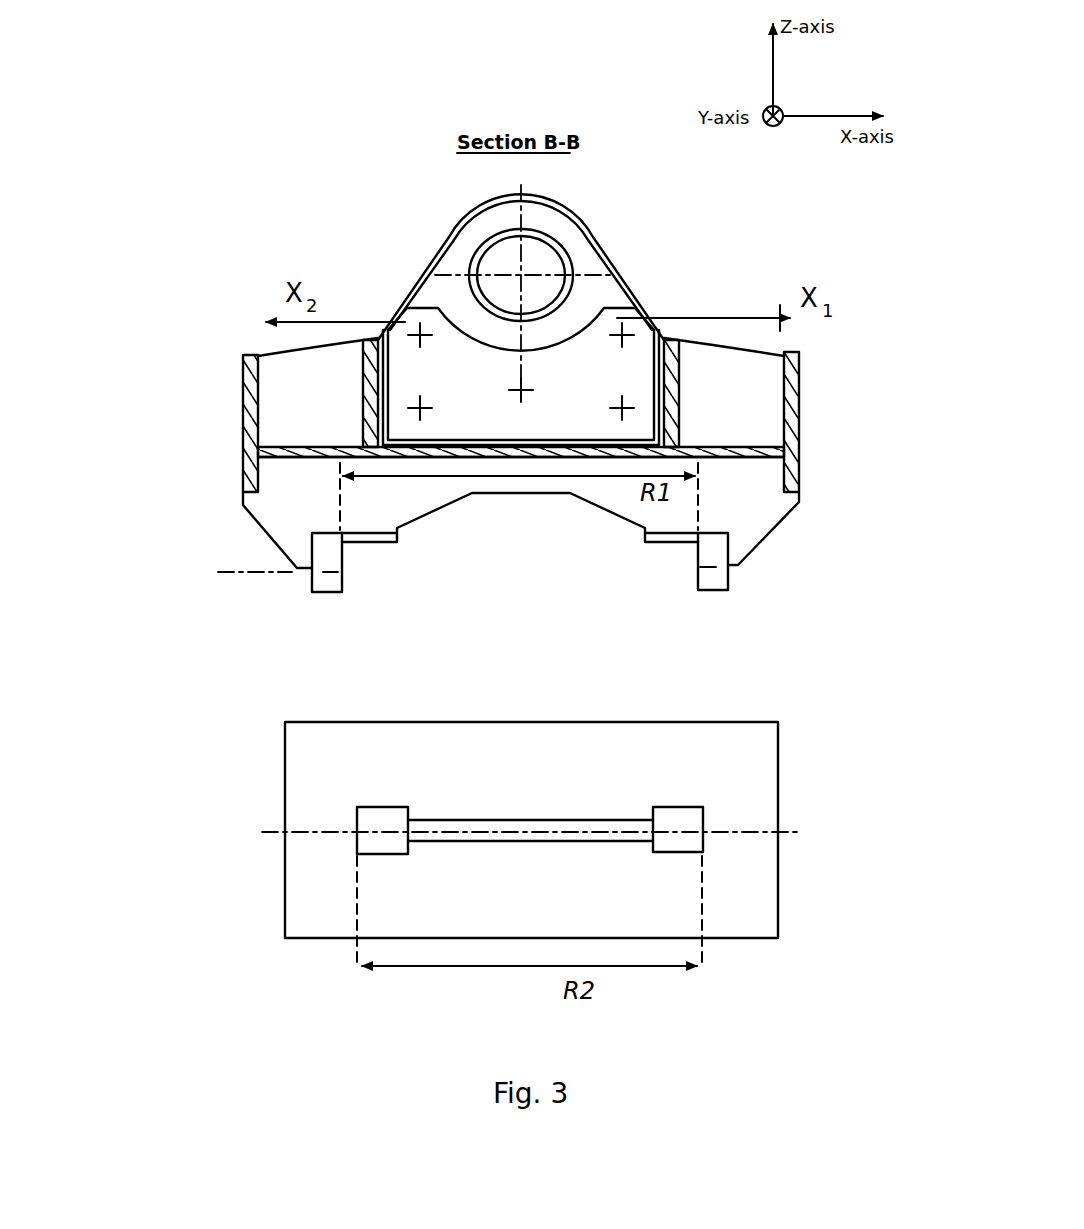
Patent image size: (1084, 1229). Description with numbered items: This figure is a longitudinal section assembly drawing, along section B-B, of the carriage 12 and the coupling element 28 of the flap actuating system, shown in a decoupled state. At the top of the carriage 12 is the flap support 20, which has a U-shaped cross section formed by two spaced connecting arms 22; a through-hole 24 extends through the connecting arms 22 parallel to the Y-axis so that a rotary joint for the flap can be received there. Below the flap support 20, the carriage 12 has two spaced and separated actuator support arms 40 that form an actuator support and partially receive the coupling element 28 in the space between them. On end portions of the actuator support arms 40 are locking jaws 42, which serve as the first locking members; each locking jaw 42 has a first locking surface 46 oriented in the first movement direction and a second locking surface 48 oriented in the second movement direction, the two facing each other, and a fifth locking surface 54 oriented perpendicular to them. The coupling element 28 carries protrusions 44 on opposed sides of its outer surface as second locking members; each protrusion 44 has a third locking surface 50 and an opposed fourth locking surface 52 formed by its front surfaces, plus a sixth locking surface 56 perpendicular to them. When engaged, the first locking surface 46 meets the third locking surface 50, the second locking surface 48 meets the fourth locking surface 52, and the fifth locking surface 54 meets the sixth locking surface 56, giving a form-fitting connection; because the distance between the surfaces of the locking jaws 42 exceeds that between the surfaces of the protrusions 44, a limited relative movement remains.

The carriage 12 is at (172, 292).
The flap support 20 is at (521, 325).
The connecting arms 22 is at (562, 231).
The through-hole 24 is at (524, 262).
The coupling element 28 is at (290, 963).
The actuator support arms 40 is at (750, 493).
The locking jaws 42 is at (568, 573).
The protrusions 44 is at (586, 800).
The first locking surface 46 is at (344, 574).
The second locking surface 48 is at (696, 568).
The third locking surface 50 is at (350, 843).
The fourth locking surface 52 is at (705, 839).
The fifth locking surface 54 is at (656, 549).
The sixth locking surface 56 is at (666, 806).